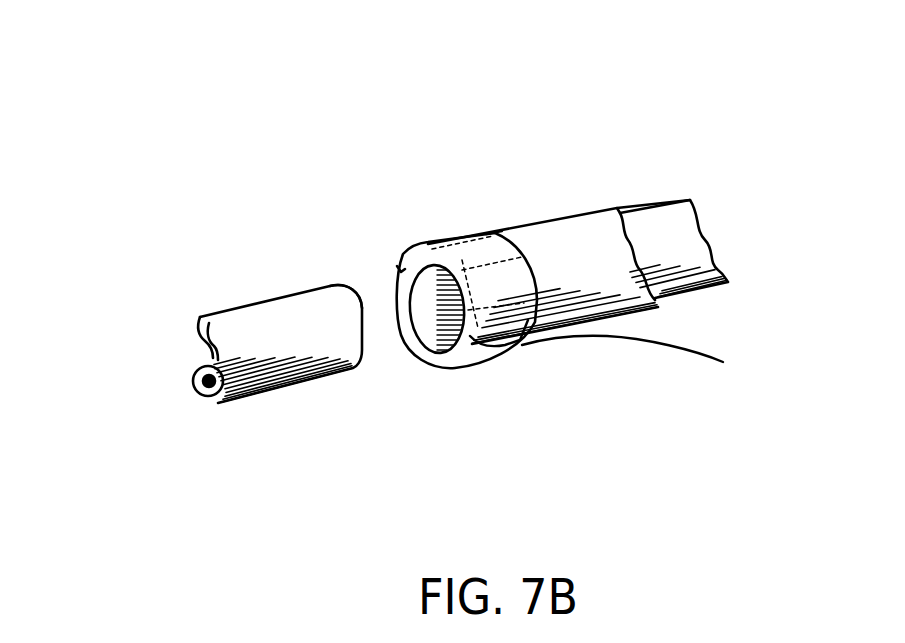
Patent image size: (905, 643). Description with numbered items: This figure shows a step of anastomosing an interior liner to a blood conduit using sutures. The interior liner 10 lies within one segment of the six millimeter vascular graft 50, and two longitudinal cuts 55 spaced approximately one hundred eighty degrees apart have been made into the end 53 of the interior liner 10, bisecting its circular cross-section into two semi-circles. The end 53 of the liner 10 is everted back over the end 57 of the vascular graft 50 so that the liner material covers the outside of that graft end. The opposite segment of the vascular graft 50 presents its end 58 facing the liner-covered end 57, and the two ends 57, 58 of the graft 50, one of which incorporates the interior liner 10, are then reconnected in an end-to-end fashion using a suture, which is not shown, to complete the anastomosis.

The interior liner 10 is at (687, 198).
The vascular graft 50 is at (250, 300).
The end of the interior liner 53 is at (493, 232).
The longitudinal cuts 55 is at (644, 360).
The end of the vascular graft 57 is at (403, 337).
The end of the vascular graft 58 is at (343, 283).